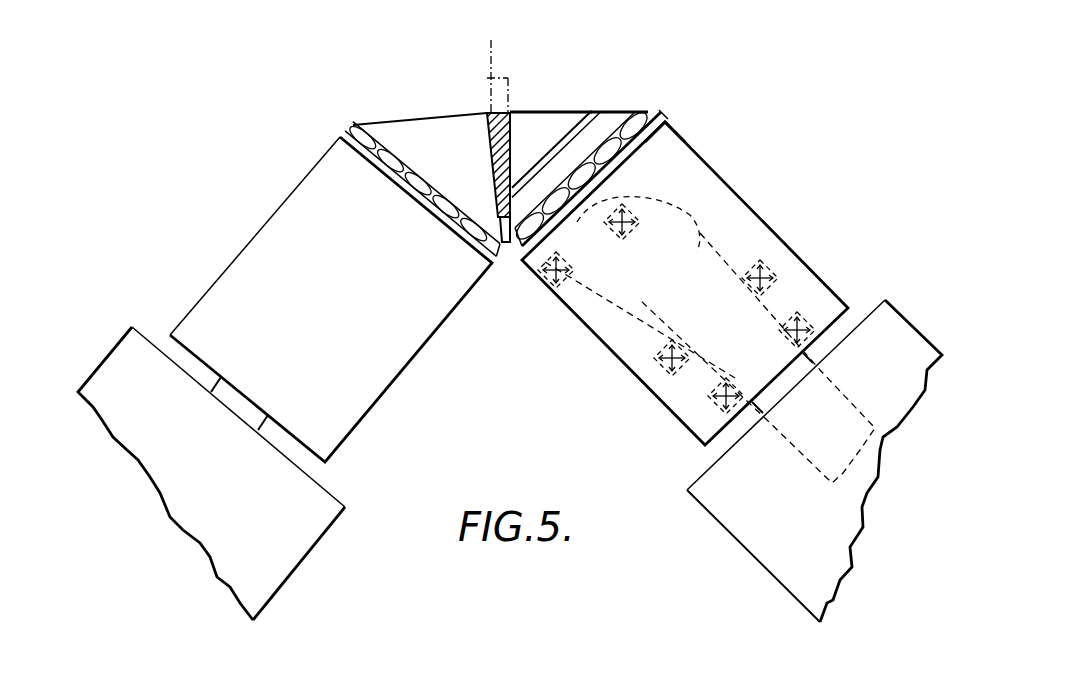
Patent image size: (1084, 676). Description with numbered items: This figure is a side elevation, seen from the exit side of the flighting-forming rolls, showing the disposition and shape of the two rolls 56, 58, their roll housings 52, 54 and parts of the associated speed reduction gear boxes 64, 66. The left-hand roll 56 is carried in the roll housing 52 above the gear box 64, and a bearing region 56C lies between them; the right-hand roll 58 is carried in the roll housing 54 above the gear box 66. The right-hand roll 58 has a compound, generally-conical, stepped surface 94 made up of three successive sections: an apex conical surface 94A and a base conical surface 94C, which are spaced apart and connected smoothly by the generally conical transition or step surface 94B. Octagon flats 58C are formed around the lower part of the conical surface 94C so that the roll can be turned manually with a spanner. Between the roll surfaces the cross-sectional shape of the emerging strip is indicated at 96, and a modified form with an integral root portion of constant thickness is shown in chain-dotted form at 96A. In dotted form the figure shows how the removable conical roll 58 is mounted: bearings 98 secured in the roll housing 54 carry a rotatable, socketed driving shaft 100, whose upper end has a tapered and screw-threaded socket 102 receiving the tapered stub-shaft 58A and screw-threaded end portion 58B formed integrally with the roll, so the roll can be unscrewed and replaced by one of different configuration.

The roll housing 52 is at (400, 373).
The roll housing 54 is at (633, 375).
The roll 56 is at (407, 122).
The bearing band of first wedge 56C is at (357, 128).
The roll 58 is at (527, 111).
The tapered stub-shaft 58A is at (597, 282).
The screw-threaded end portion 58B is at (630, 235).
The octagon flats 58C is at (668, 121).
The speed reduction gear box 64 is at (327, 491).
The speed reduction gear box 66 is at (698, 479).
The compound conical stepped surface 94 is at (545, 95).
The apex conical surface 94A is at (562, 110).
The transition surface 94B is at (590, 108).
The base conical surface 94C is at (667, 110).
The strip cross section 96 is at (488, 93).
The integral root portion 96A is at (492, 43).
The bearings 98 is at (733, 176).
The driving shaft 100 is at (760, 213).
The tapered screw-threaded socket 102 is at (645, 239).